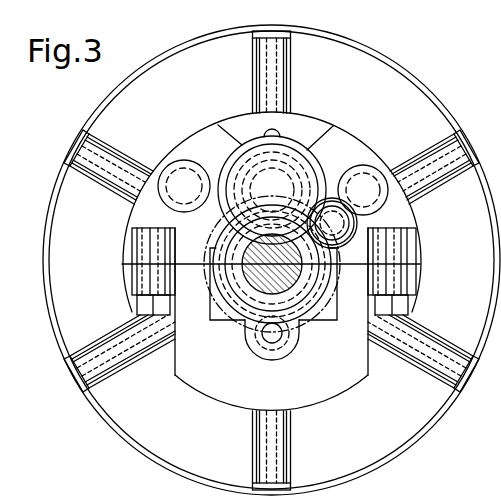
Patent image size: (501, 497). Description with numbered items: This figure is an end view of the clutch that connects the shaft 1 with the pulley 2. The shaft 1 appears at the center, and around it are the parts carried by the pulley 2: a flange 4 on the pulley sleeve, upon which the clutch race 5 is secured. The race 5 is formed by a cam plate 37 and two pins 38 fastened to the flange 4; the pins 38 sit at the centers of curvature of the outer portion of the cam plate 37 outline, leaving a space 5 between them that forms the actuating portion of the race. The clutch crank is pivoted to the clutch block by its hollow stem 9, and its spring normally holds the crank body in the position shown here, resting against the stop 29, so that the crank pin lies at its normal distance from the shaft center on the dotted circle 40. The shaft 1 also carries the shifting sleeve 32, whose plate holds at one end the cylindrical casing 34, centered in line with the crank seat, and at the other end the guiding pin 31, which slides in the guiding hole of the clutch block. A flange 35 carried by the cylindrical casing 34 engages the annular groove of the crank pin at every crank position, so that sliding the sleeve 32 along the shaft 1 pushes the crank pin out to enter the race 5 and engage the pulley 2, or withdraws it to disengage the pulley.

The shaft 1 is at (272, 264).
The pulley 2 is at (62, 327).
The flange 4 is at (410, 219).
The clutch race 5 is at (340, 160).
The stem of the clutch crank 9 is at (283, 172).
The stop 29 is at (272, 264).
The guiding pin 31 is at (273, 332).
The shifting sleeve 32 is at (235, 318).
The cylindrical casing 34 is at (233, 197).
The flange 35 is at (337, 194).
The cam plate 37 is at (317, 127).
The pins 38 is at (170, 203).
The dotted circle 40 is at (325, 315).